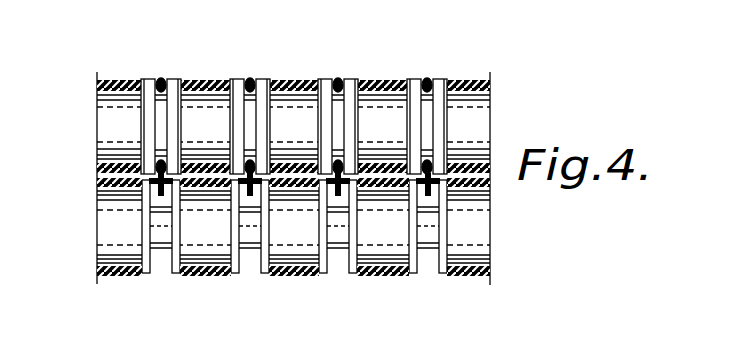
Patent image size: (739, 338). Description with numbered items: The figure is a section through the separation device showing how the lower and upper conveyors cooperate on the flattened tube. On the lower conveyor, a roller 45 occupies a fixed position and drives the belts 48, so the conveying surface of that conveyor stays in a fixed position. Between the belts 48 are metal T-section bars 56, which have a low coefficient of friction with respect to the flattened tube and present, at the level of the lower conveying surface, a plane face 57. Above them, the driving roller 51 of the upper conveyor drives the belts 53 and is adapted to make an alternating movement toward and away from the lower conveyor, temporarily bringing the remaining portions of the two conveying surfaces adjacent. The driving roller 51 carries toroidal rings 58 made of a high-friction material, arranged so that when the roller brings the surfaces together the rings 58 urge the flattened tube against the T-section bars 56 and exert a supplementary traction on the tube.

The roller 45 is at (482, 226).
The belts 48 is at (283, 277).
The driving roller 51 is at (481, 137).
The belts 53 is at (280, 80).
The T-section bars 56 is at (250, 191).
The plane face 57 is at (102, 186).
The toroidal rings 58 is at (150, 92).